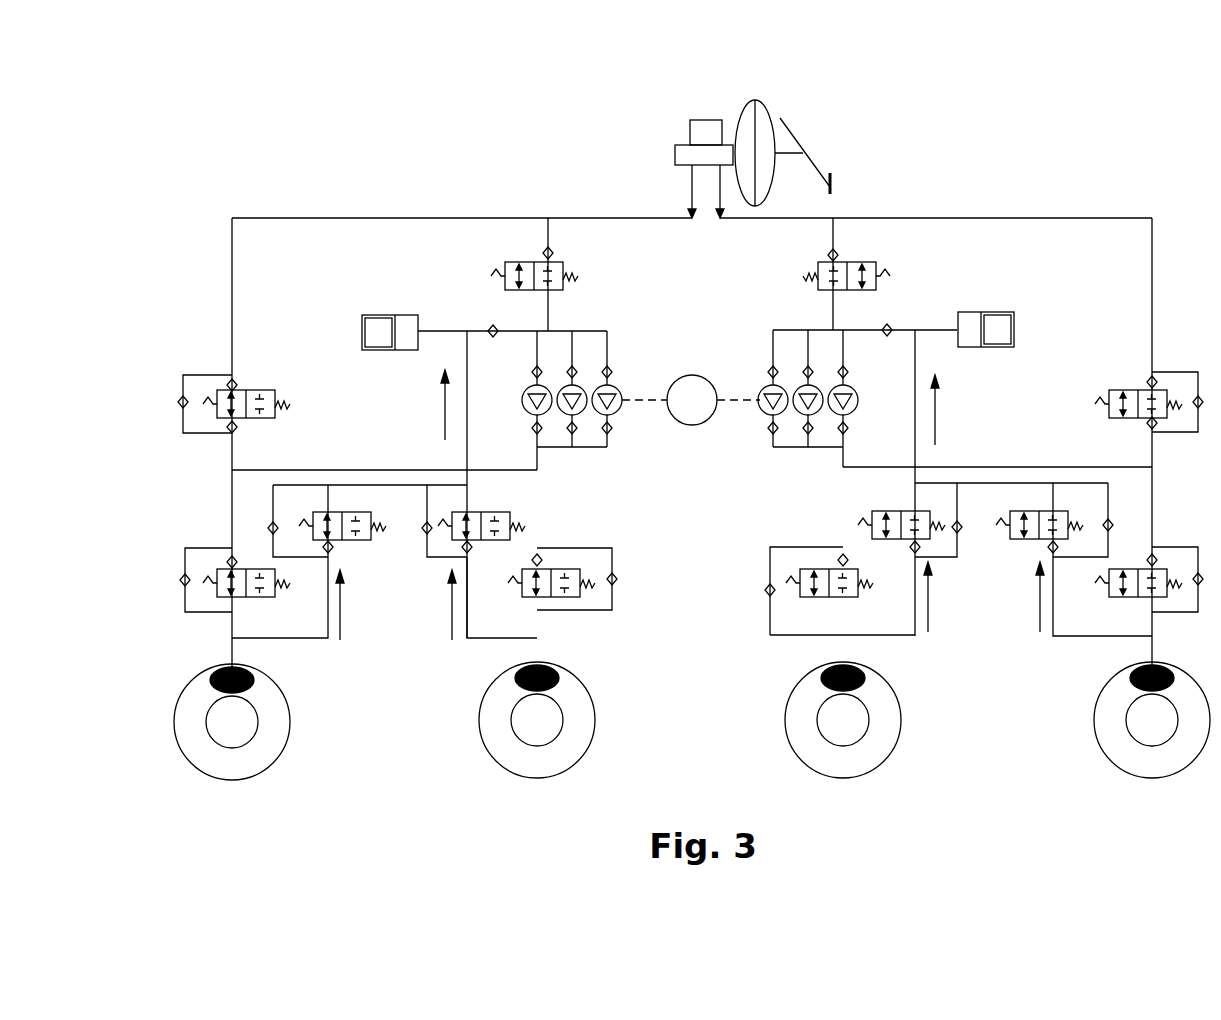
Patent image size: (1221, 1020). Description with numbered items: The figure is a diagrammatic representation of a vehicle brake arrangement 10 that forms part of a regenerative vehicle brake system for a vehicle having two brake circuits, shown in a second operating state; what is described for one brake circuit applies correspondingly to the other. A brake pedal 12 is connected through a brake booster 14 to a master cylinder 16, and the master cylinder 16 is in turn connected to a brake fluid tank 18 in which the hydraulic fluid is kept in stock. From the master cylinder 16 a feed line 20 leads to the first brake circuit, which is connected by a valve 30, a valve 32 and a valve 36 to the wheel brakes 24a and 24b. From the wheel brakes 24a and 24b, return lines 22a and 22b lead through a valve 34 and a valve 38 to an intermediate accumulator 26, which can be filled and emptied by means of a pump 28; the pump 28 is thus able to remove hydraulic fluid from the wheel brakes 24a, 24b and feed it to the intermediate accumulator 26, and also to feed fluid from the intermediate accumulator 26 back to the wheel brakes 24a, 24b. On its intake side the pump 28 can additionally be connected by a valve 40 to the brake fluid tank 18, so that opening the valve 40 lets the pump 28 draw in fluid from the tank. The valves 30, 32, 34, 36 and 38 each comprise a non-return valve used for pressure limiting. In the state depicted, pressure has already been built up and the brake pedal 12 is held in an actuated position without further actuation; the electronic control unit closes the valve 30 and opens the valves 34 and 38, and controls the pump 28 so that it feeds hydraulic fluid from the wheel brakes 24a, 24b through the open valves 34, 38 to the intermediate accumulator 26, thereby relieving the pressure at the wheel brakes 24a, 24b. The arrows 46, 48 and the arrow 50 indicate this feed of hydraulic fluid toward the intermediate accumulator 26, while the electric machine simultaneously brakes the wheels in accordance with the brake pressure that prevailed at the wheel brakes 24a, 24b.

The vehicle brake arrangement 10 is at (431, 128).
The brake pedal 12 is at (803, 146).
The brake booster 14 is at (770, 102).
The master cylinder 16 is at (675, 148).
The brake fluid tank 18 is at (690, 138).
The feed line 20 is at (377, 218).
The return line 22a is at (311, 646).
The return line 22b is at (485, 640).
The wheel brake 24a is at (267, 683).
The wheel brake 24b is at (572, 683).
The intermediate accumulator 26 is at (388, 315).
The pump 28 is at (690, 375).
The valve 30 is at (258, 390).
The valve 32 is at (257, 603).
The valve 34 is at (343, 512).
The valve 36 is at (560, 568).
The valve 38 is at (483, 511).
The valve 40 is at (537, 258).
The arrow 46 is at (341, 600).
The arrow 48 is at (452, 600).
The arrow 50 is at (440, 396).